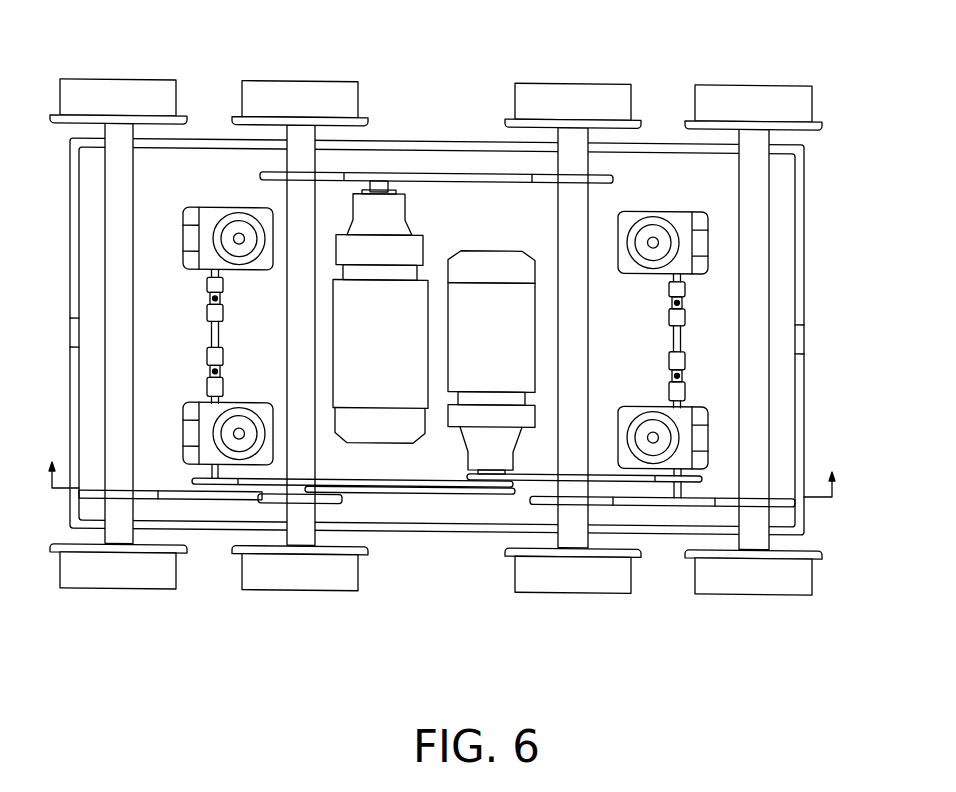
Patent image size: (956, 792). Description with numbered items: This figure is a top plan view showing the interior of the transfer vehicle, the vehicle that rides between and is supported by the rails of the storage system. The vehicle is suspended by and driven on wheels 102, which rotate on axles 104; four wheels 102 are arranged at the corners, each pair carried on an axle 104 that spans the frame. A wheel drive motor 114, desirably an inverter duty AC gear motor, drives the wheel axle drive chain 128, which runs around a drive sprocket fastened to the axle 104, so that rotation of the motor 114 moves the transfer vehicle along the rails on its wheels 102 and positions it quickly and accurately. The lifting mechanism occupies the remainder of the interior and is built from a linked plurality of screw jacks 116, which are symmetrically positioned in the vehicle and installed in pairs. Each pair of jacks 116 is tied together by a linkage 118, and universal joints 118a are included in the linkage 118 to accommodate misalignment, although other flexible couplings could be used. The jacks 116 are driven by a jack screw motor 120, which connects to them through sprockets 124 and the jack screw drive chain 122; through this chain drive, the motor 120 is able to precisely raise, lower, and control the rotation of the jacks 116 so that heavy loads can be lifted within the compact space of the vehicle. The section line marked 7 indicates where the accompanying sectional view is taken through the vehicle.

The wheels 102 is at (743, 572).
The axles 104 is at (782, 467).
The wheel drive motor 114 is at (392, 313).
The screw jacks 116 is at (652, 222).
The linkage 118 is at (678, 342).
The universal joints 118a is at (679, 315).
The jack screw motor 120 is at (491, 310).
The jack screw drive chain 122 is at (387, 492).
The sprockets 124 is at (516, 490).
The wheel axle drive chain 128 is at (437, 174).
The section line 7- 7 is at (445, 483).